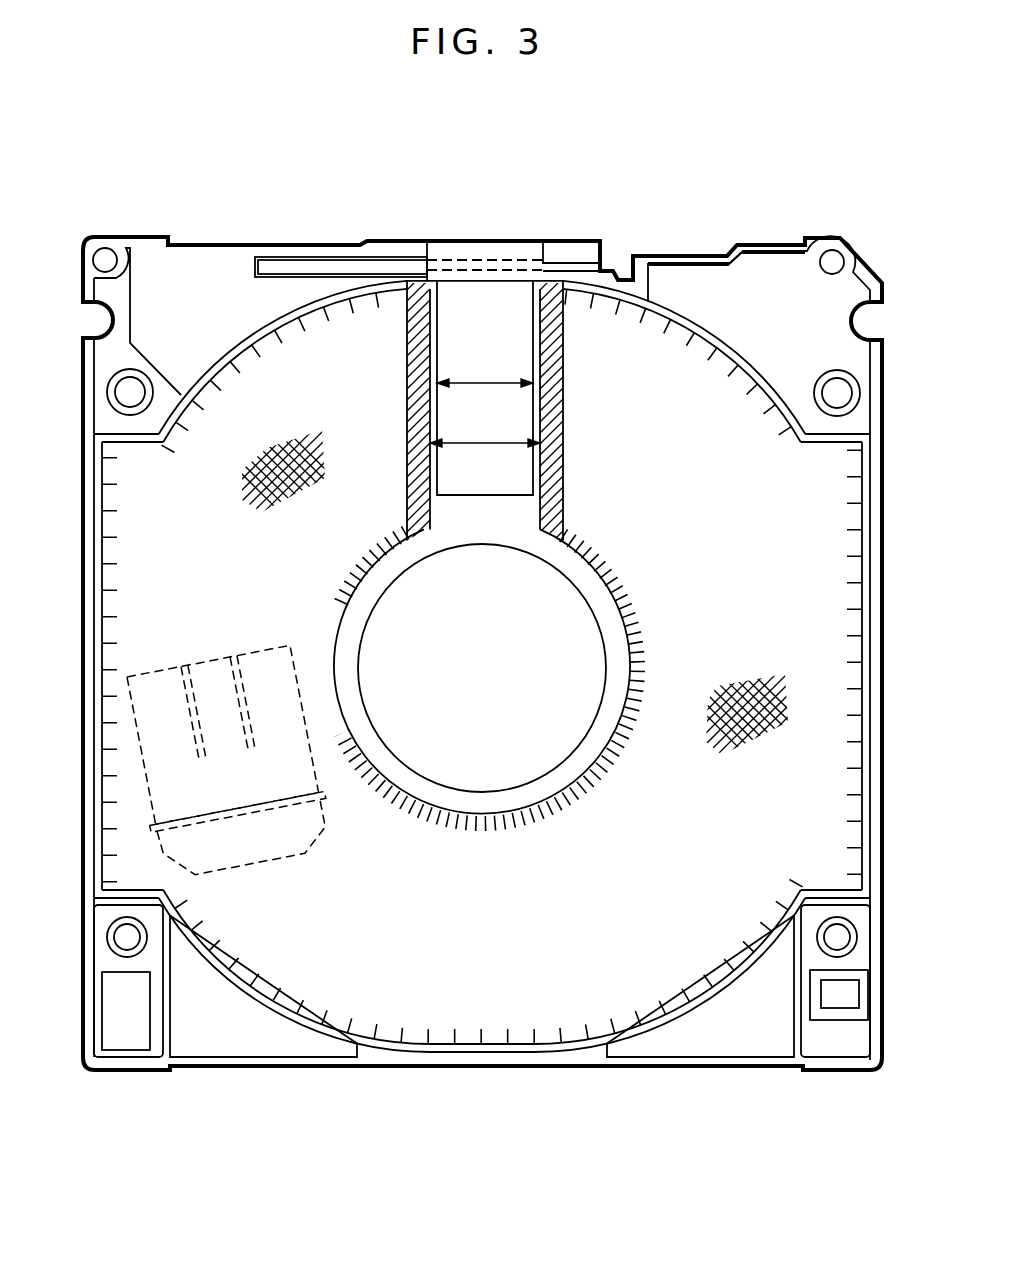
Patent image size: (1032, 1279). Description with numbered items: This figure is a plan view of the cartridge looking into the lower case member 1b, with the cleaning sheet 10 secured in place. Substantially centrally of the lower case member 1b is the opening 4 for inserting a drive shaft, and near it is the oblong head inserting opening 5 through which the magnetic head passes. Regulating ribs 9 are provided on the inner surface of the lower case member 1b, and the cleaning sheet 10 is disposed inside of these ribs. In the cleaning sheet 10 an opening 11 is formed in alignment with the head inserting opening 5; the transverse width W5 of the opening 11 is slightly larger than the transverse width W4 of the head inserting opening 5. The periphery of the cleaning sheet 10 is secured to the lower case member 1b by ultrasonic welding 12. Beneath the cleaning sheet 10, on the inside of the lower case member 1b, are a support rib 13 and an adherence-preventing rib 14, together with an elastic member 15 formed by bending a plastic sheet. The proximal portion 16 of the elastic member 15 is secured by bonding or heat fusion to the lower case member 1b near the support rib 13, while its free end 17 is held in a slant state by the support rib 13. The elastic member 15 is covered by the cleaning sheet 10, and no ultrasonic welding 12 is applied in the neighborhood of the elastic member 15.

The lower case member 1b is at (722, 282).
The opening 4 is at (495, 692).
The head inserting opening 5 is at (527, 327).
The regulating ribs 9 is at (250, 338).
The cleaning sheet 10 is at (775, 713).
The opening 11 is at (432, 328).
The ultrasonic welding 12 is at (846, 628).
The support rib 13 is at (325, 797).
The adherence-preventing rib 14 is at (230, 667).
The elastic member 15 is at (162, 755).
The proximal portion 16 is at (270, 842).
The free end 17 is at (237, 809).
The transverse width of the magnetic head insertion opening W4 is at (495, 384).
The transverse width of the opening in the cleaning sheet W5 is at (495, 445).